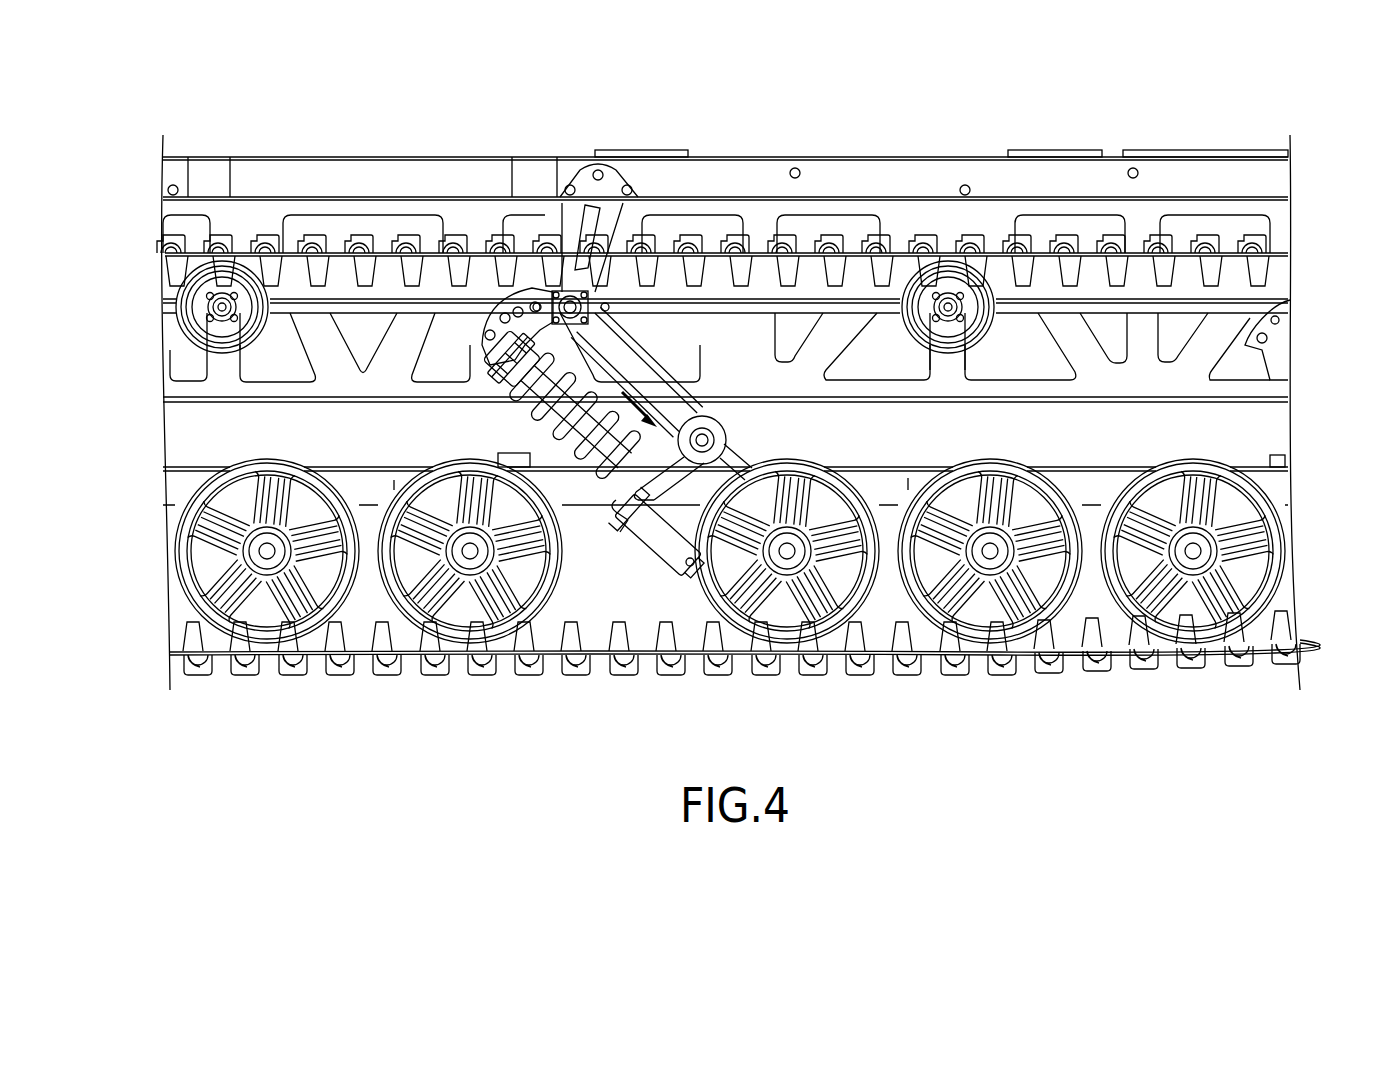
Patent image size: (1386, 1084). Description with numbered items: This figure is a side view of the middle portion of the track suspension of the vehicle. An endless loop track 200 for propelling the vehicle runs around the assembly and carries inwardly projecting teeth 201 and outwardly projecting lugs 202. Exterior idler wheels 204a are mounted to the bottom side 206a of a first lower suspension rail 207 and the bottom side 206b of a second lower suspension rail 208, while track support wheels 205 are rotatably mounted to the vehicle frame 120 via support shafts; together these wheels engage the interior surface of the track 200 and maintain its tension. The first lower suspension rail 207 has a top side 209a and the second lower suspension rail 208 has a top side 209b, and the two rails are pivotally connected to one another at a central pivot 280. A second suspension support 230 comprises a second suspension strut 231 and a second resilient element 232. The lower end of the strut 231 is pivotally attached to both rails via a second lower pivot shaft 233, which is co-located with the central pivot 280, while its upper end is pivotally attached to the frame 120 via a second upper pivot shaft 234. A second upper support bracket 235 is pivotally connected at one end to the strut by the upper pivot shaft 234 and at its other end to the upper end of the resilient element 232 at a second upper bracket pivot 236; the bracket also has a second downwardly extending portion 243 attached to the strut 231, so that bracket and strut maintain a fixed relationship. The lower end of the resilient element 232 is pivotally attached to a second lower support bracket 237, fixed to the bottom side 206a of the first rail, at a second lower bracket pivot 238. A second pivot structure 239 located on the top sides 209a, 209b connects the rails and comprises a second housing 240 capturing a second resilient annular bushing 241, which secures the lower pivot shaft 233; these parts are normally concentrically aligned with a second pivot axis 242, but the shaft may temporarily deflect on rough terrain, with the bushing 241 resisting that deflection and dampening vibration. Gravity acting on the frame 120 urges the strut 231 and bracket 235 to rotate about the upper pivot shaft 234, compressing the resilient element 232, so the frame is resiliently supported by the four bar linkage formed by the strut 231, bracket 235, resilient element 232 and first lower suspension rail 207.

The vehicle frame 120 is at (1232, 394).
The endless loop track 200 is at (745, 699).
The inwardly projecting teeth 201 is at (1097, 630).
The outwardly projecting lugs 202 is at (1085, 665).
The exterior idler wheel 204a is at (183, 535).
The track support wheels 205 is at (946, 268).
The bottom side of first lower suspension rail 206a is at (577, 510).
The bottom side of second lower suspension rail 206b is at (873, 565).
The first lower suspension rail 207 is at (183, 480).
The second lower suspension rail 208 is at (1093, 480).
The top side of first lower suspension rail 209a is at (355, 470).
The top side of second lower suspension rail 209b is at (922, 470).
The second suspension support 230 is at (539, 519).
The second suspension strut 231 is at (622, 352).
The second resilient element 232 is at (565, 440).
The second lower pivot shaft 233 is at (715, 437).
The second upper pivot shaft 234 is at (575, 300).
The second upper support bracket 235 is at (484, 335).
The second upper bracket pivot 236 is at (498, 345).
The second lower support bracket 237 is at (655, 557).
The second lower bracket pivot 238 is at (690, 566).
The second pivot structure 239 is at (553, 295).
The second housing 240 is at (718, 420).
The second resilient annular bushing 241 is at (726, 449).
The second pivot axis 242 is at (704, 463).
The second downwardly extending portion 243 is at (580, 336).
The central pivot 280 is at (716, 398).